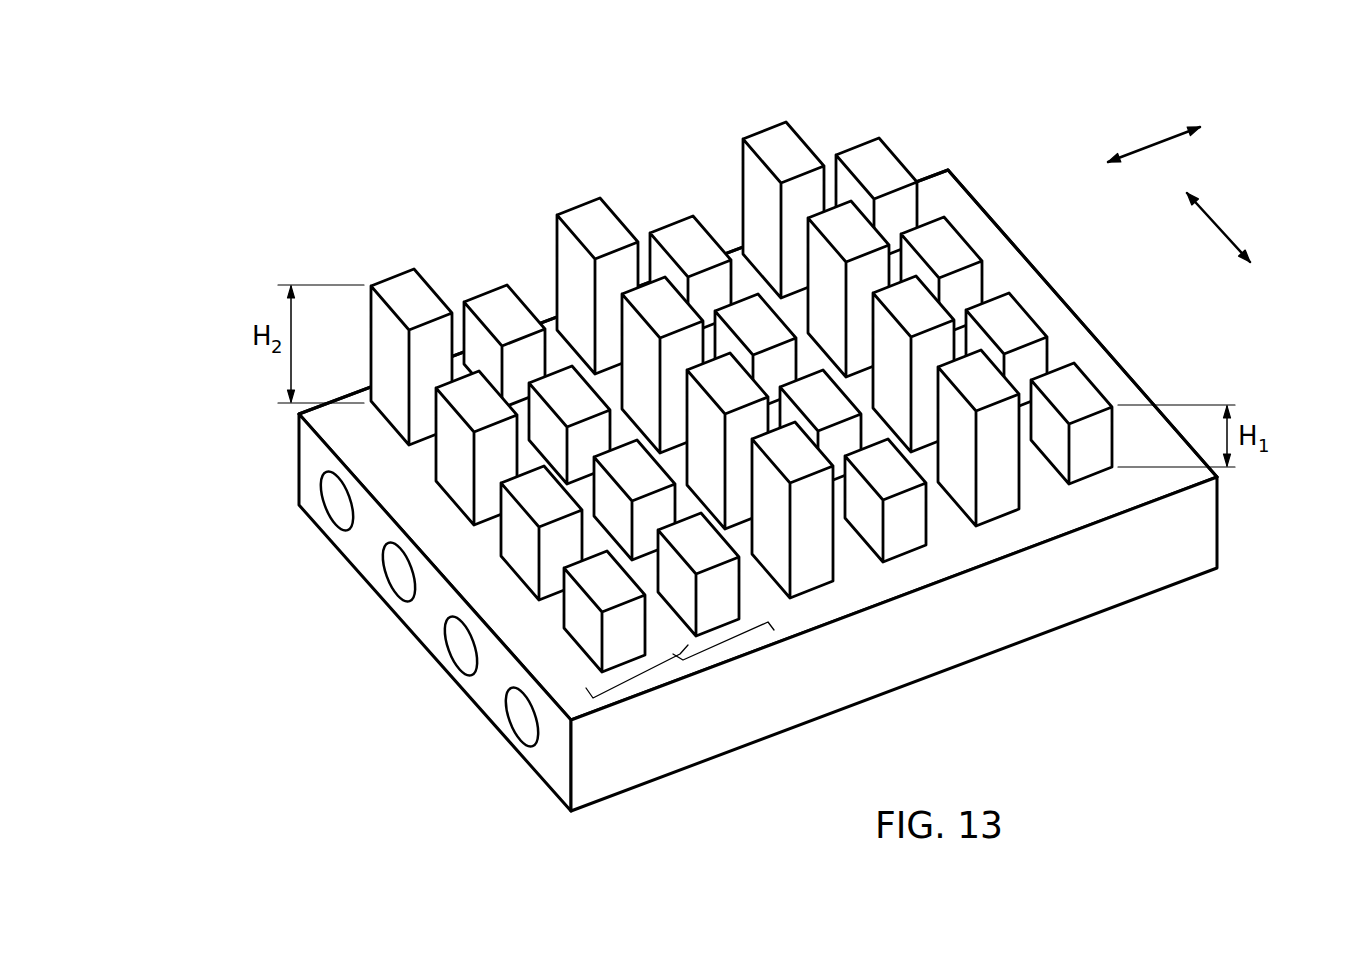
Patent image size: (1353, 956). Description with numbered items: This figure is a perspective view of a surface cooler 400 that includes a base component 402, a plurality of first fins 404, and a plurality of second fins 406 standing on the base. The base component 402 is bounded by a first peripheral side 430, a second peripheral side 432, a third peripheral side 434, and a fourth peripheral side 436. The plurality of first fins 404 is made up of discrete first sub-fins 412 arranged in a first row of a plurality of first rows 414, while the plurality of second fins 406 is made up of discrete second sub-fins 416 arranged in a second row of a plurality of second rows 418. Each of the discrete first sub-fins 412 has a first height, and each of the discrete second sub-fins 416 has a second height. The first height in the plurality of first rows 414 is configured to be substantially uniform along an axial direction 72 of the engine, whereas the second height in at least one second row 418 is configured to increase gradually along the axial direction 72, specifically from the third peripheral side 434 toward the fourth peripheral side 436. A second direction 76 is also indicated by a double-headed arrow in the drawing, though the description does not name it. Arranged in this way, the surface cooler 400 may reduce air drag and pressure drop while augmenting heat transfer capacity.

The surface cooler 400 is at (705, 432).
The base component 402 is at (764, 461).
The plurality of first fins 404 is at (741, 408).
The plurality of second fins 406 is at (617, 237).
The discrete first sub-fins 412 is at (613, 513).
The first rows 414 is at (735, 642).
The discrete second sub-fins 416 is at (673, 585).
The second rows 418 is at (640, 680).
The first peripheral side 430 is at (308, 463).
The second peripheral side 432 is at (1082, 318).
The third peripheral side 434 is at (942, 635).
The fourth peripheral side 436 is at (933, 172).
The axial direction 72 is at (1219, 221).
The second direction 76 is at (1151, 139).